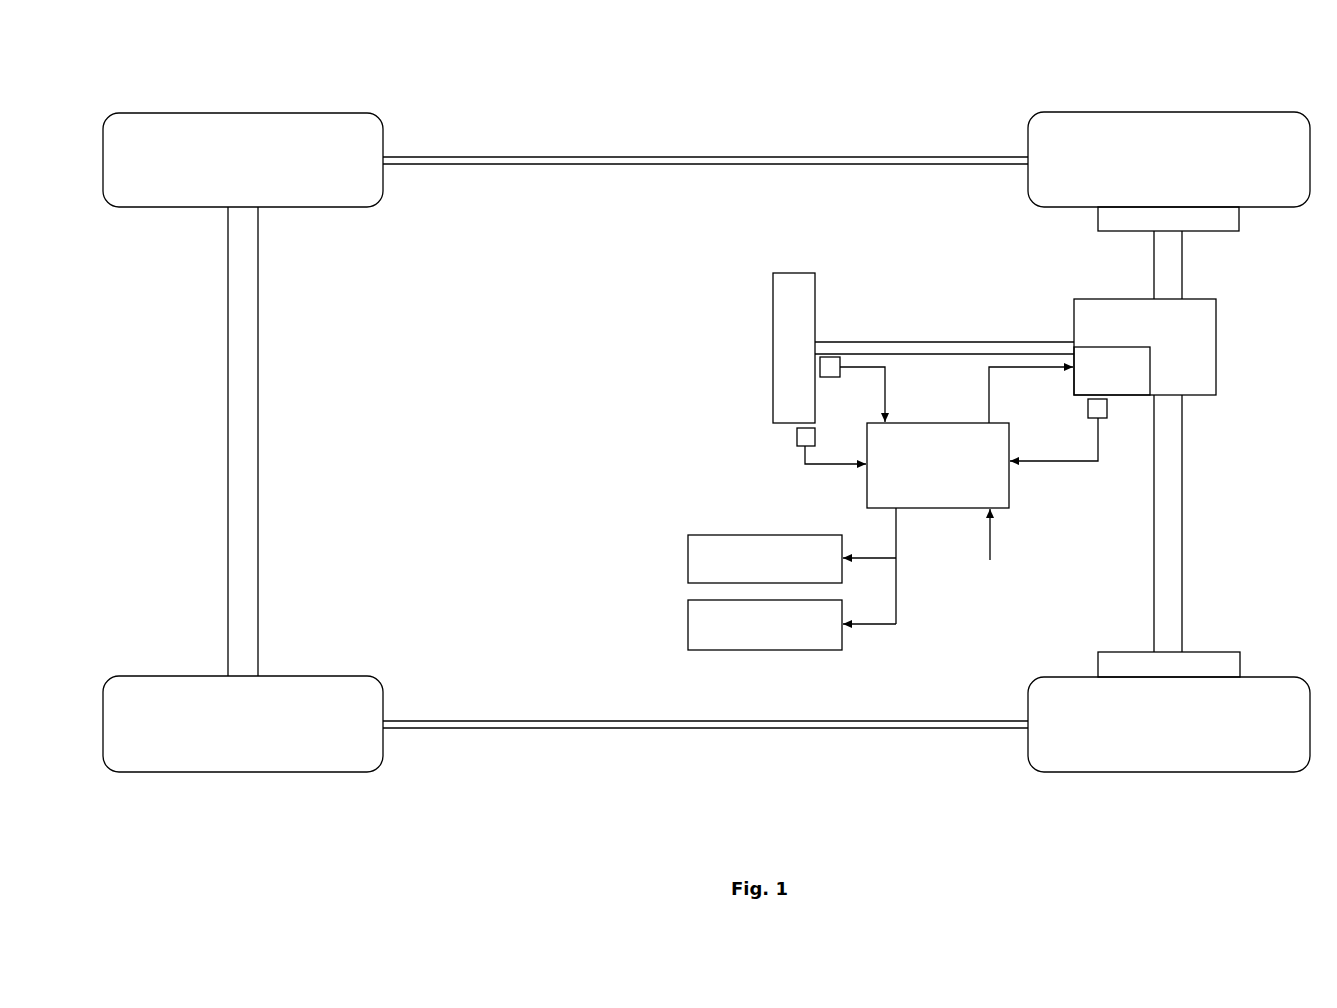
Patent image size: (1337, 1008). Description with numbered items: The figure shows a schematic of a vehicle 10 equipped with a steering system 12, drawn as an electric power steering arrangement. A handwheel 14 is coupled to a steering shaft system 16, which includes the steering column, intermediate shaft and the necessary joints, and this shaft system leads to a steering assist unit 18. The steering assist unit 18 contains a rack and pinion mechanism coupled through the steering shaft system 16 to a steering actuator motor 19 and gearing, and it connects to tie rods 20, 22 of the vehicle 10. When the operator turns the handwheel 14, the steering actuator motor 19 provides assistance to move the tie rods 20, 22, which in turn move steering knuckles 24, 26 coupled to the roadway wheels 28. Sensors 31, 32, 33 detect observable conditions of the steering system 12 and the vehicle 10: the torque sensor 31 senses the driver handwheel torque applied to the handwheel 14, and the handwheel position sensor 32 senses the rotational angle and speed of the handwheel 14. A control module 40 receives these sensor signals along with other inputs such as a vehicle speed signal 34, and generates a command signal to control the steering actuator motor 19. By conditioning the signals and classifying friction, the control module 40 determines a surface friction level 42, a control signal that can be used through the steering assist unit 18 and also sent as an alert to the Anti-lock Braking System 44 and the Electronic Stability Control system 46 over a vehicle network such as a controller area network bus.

The vehicle 10 is at (1100, 75).
The steering system 12 is at (900, 283).
The handwheel 14 is at (796, 272).
The steering shaft system 16 is at (960, 342).
The steering assist unit 18 is at (1216, 345).
The steering actuator motor 19 is at (1105, 348).
The tie rod 20 is at (1182, 283).
The tie rod 22 is at (1182, 547).
The steering knuckle 24 is at (1095, 218).
The steering knuckle 26 is at (1195, 650).
The roadway wheel 28 is at (1252, 112).
The torque sensor 31 is at (838, 356).
The handwheel position sensor 32 is at (1085, 412).
The sensor 33 is at (795, 445).
The vehicle speed signal 34 is at (997, 540).
The control module 40 is at (905, 421).
The surface friction level 42 is at (868, 624).
The Anti-lock Braking System 44 is at (687, 560).
The Electronic Stability Control system 46 is at (687, 622).